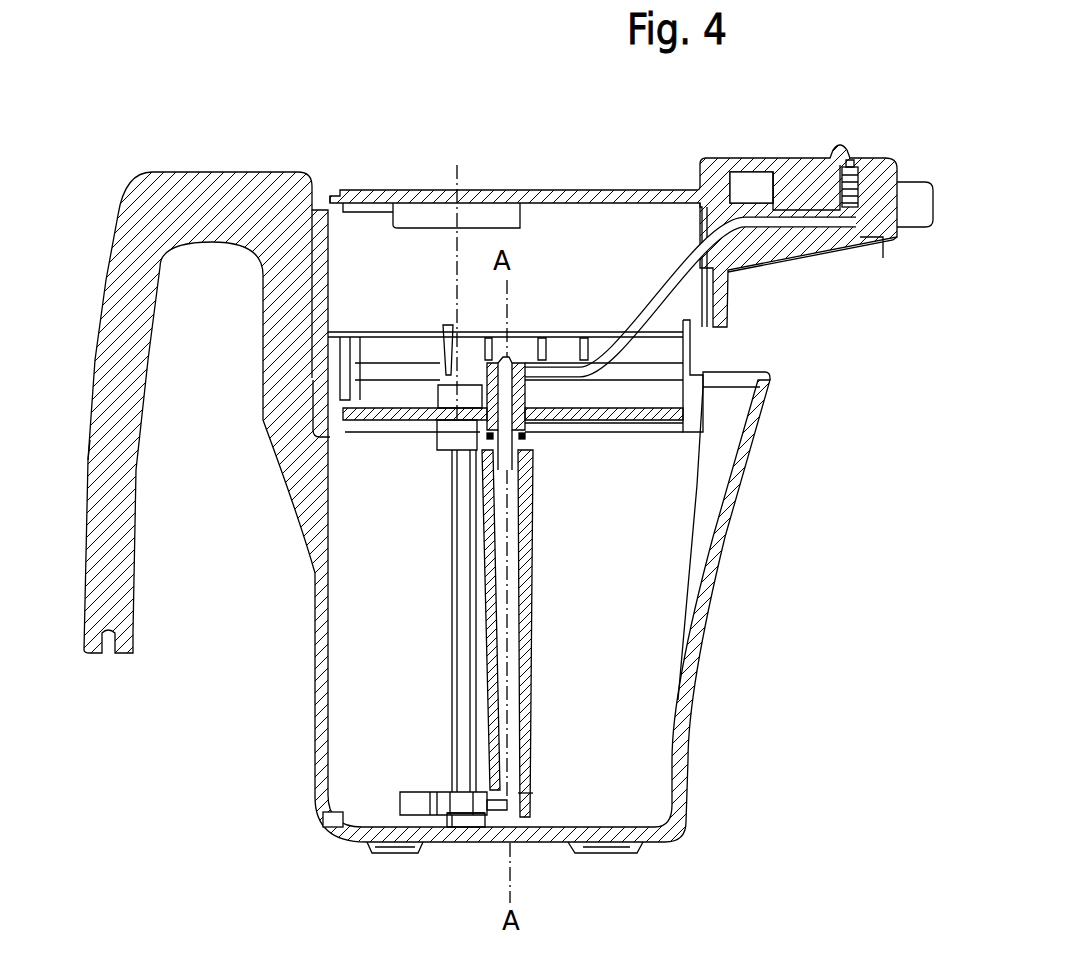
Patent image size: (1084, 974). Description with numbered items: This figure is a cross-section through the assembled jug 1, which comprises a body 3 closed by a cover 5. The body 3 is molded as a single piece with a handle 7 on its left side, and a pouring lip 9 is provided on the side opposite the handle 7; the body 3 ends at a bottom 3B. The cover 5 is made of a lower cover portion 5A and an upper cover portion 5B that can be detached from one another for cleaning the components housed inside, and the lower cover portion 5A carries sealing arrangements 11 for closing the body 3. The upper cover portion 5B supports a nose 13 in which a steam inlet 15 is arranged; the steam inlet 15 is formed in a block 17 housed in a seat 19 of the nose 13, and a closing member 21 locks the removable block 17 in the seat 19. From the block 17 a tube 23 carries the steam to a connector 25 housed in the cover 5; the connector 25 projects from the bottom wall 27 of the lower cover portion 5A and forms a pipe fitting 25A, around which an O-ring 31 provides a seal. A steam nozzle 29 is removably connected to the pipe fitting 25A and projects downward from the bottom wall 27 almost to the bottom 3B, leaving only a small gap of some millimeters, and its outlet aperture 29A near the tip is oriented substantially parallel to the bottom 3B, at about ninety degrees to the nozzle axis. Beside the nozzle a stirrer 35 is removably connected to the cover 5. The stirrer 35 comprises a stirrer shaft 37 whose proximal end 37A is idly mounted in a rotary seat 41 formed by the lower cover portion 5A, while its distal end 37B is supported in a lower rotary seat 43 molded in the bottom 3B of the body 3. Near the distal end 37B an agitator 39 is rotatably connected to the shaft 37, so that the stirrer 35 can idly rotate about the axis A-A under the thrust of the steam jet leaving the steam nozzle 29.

The jug 1 is at (535, 170).
The body 3 is at (690, 655).
The bottom 3B is at (608, 824).
The cover 5 is at (375, 243).
The lower cover portion 5A is at (730, 358).
The upper cover portion 5B is at (610, 190).
The handle 7 is at (125, 522).
The pouring lip 9 is at (766, 402).
The sealing arrangements 11 is at (313, 425).
The nose 13 is at (759, 156).
The steam inlet 15 is at (852, 165).
The block 17 is at (807, 180).
The seat 19 is at (745, 182).
The closing member 21 is at (792, 253).
The tube 23 is at (653, 300).
The connector 25 is at (505, 362).
The pipe fitting 25A is at (495, 453).
The bottom wall 27 is at (628, 410).
The steam nozzle 29 is at (531, 607).
The outlet aperture 29A is at (482, 810).
The O-ring 31 is at (527, 443).
The stirrer 35 is at (434, 694).
The stirrer shaft 37 is at (462, 743).
The proximal end 37A is at (452, 382).
The distal end 37B is at (458, 829).
The agitator 39 is at (388, 796).
The rotary seat 41 is at (443, 425).
The lower rotary seat 43 is at (467, 829).